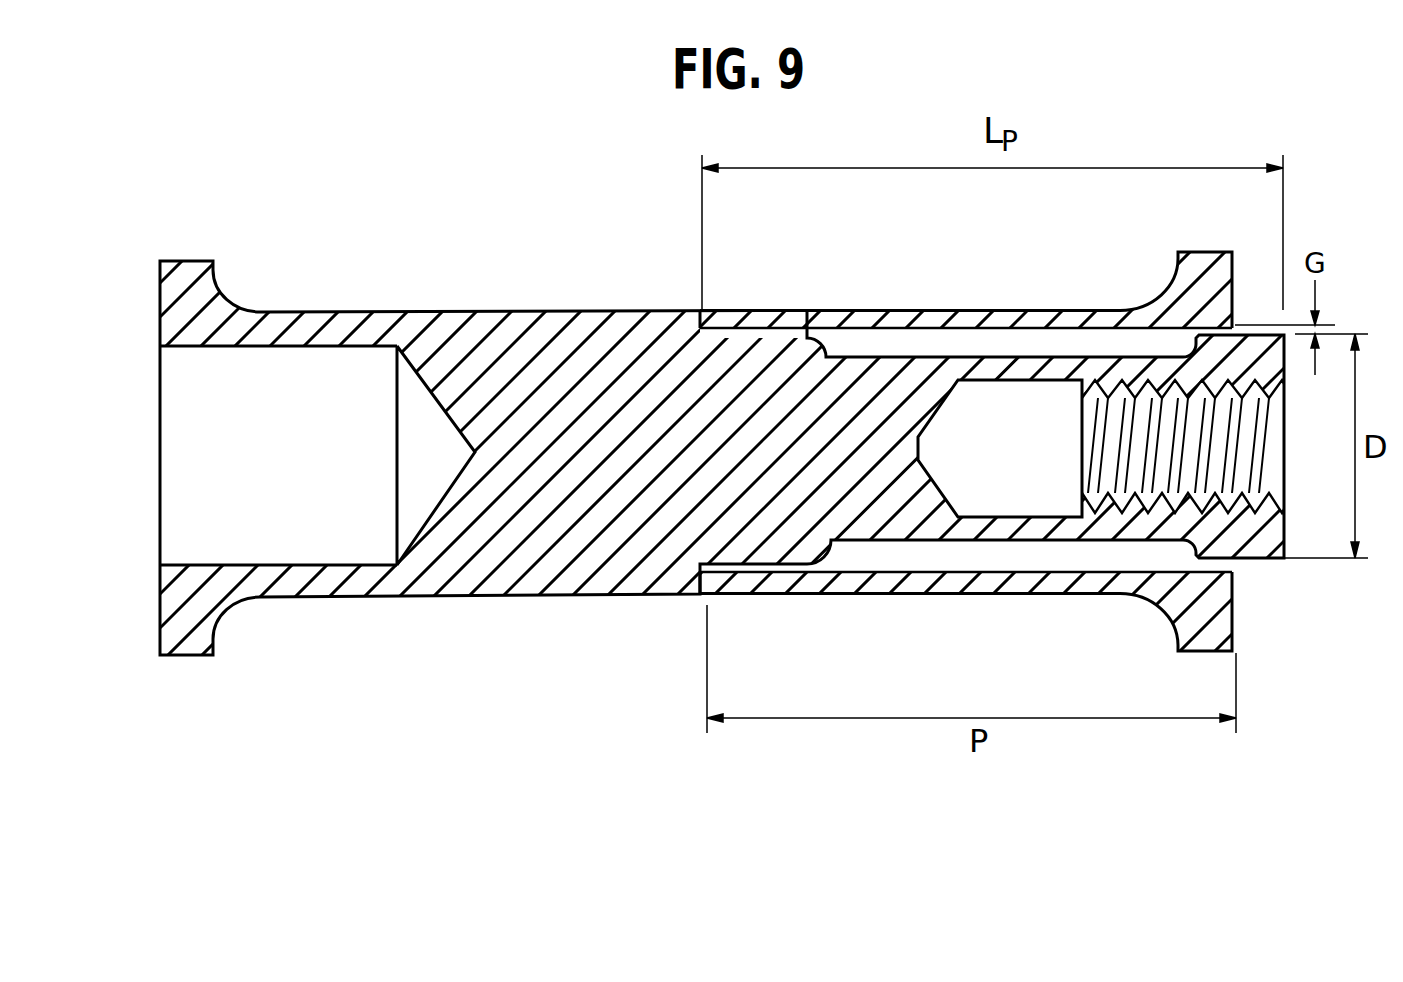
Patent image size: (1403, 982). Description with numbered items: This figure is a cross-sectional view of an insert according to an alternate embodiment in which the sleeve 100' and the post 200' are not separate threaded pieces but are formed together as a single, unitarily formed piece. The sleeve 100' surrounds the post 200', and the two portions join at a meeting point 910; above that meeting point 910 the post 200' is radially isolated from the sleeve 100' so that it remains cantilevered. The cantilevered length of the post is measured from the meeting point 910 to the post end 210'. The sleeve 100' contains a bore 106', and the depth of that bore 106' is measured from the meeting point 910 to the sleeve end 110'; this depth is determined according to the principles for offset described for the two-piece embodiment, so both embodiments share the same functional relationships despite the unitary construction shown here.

The meeting point 910 is at (673, 310).
The post 200' is at (1004, 360).
The sleeve 100' is at (910, 387).
The bore 106' is at (966, 376).
The post end 210' is at (1242, 477).
The sleeve end 110' is at (1255, 472).